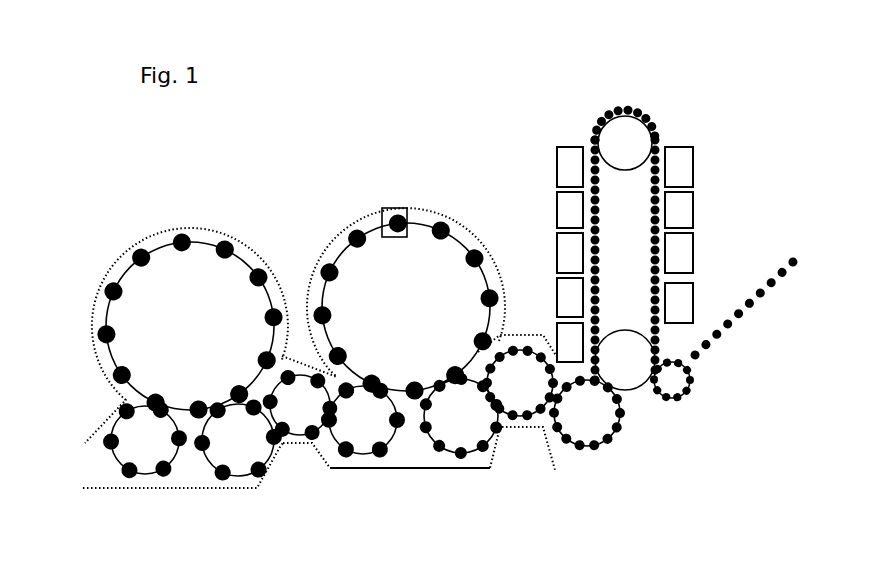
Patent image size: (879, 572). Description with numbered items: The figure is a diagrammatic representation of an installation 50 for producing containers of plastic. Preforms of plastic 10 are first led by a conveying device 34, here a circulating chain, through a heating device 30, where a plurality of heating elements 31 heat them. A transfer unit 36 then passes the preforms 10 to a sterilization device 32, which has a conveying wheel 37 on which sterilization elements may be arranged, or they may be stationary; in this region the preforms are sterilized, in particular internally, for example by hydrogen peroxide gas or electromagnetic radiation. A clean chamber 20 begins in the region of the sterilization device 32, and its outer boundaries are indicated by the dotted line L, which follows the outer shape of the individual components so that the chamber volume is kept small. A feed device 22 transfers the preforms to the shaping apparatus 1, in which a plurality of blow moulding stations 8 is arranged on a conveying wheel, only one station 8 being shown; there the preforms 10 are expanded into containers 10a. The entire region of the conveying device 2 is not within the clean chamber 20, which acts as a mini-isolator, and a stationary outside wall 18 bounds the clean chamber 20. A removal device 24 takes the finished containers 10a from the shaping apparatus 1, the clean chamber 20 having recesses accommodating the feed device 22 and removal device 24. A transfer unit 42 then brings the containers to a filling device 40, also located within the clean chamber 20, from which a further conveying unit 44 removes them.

The shaping apparatus 1 is at (388, 185).
The conveying device 2 is at (452, 283).
The blow moulding station 8 is at (405, 228).
The preforms of plastic 10 is at (623, 423).
The containers 10a is at (388, 450).
The wall 18 is at (455, 225).
The clean chamber 20 is at (340, 212).
The feed device 22 is at (478, 430).
The removal device 24 is at (358, 447).
The heating device 30 is at (585, 120).
The heating elements 31 is at (570, 165).
The sterilization device 32 is at (520, 318).
The conveying device 34 is at (630, 130).
The transfer unit 36 is at (575, 428).
The conveying wheel 37 is at (520, 402).
The filling device 40 is at (162, 263).
The transfer unit 42 is at (260, 437).
The conveying unit 44 is at (130, 448).
The installation 50 is at (327, 112).
The dotted line L is at (413, 472).